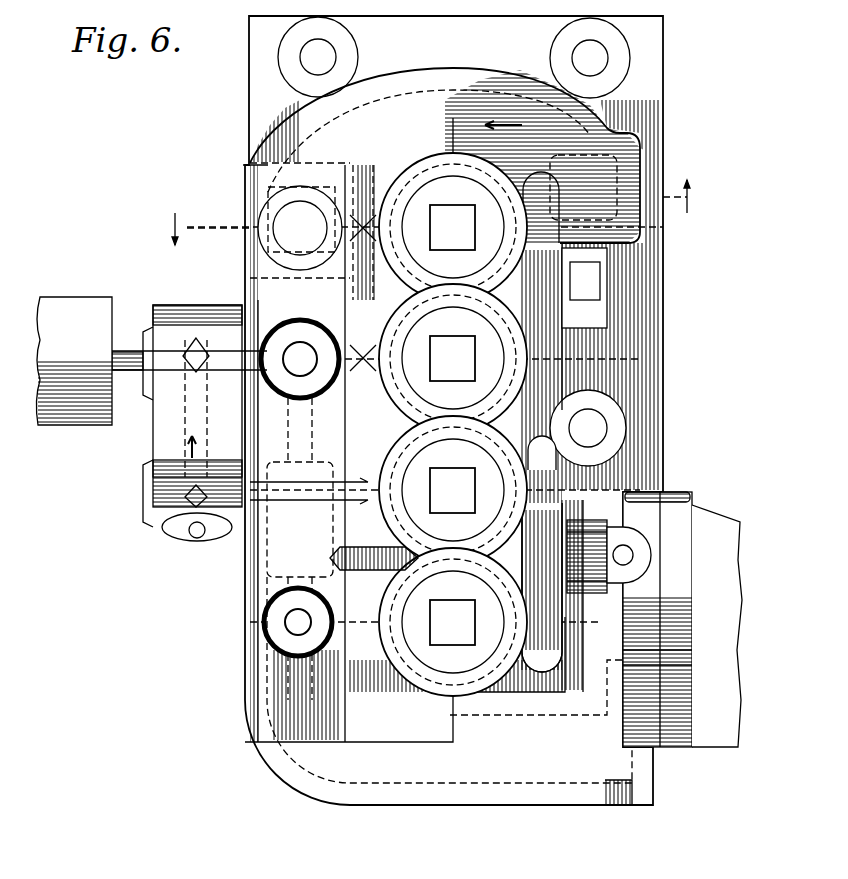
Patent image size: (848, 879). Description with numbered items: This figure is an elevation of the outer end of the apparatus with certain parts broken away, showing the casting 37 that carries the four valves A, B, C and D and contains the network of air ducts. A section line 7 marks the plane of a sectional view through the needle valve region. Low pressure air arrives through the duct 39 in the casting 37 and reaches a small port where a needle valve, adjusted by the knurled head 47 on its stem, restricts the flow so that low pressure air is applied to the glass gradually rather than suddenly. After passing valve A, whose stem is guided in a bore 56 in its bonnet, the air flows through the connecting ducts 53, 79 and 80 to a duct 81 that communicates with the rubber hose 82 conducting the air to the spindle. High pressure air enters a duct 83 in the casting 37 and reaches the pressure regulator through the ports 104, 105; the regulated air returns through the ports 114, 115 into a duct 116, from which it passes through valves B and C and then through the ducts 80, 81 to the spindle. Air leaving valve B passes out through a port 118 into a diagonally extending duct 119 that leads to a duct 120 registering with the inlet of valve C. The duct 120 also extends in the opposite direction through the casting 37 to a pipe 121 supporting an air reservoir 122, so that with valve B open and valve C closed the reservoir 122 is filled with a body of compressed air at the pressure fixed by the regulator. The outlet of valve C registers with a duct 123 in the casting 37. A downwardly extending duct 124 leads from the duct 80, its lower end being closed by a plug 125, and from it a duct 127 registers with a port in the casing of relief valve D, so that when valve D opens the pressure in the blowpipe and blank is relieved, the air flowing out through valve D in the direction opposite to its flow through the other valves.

The section line 7- 7 is at (428, 212).
The casting 37 is at (663, 292).
The duct 39 is at (487, 100).
The knurled head 47 is at (290, 214).
The duct 53 is at (450, 157).
The bore 56 is at (433, 222).
The duct 79 is at (422, 256).
The duct 80 is at (332, 403).
The duct 81 is at (183, 407).
The rubber hose 82 is at (292, 385).
The duct 83 is at (542, 455).
The port 104 is at (650, 549).
The port 105 is at (662, 557).
The port 114 is at (650, 712).
The port 115 is at (607, 715).
The duct 116 is at (473, 773).
The port 118 is at (453, 490).
The duct 119 is at (195, 412).
The duct 120 is at (226, 308).
The pipe 121 is at (125, 352).
The air reservoir 122 is at (63, 425).
The duct 123 is at (453, 358).
The duct 124 is at (333, 567).
The plug 125 is at (312, 742).
The duct 127 is at (268, 642).